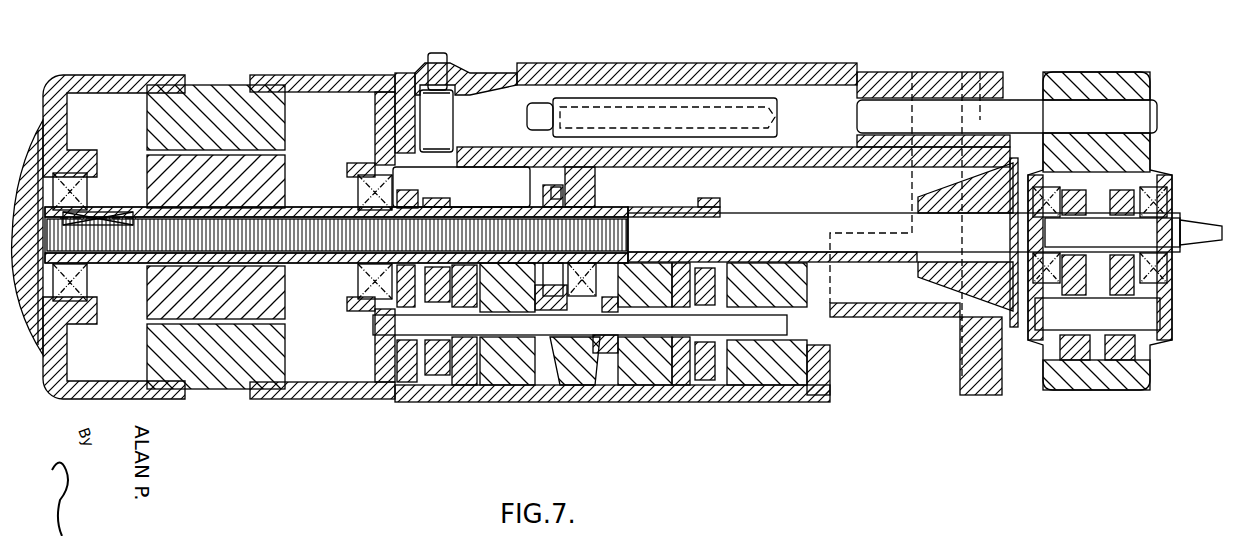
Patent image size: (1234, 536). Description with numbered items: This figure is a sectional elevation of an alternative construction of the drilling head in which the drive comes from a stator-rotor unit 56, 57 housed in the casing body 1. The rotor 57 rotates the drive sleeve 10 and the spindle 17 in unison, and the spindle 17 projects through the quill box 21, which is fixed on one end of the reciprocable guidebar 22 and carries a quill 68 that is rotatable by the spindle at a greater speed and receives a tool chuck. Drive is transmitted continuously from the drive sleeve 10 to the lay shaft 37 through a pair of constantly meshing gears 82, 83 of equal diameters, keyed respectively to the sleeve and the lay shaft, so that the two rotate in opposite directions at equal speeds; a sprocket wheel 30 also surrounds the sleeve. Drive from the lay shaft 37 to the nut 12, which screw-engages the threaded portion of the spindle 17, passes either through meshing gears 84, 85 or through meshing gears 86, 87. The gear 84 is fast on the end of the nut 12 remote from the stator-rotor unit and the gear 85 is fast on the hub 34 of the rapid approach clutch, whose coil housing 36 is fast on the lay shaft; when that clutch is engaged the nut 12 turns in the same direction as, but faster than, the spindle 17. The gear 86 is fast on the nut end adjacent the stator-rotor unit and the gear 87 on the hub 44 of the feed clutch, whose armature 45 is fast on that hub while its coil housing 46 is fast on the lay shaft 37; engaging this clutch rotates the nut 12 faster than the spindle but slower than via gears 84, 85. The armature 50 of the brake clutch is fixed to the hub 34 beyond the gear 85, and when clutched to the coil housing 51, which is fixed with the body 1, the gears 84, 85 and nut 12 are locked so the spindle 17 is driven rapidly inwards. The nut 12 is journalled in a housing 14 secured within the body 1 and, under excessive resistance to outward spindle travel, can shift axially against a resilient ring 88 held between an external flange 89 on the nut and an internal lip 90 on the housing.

The body 1 is at (560, 393).
The drive sleeve 10 is at (128, 263).
The nut 12 is at (655, 212).
The housing 14 is at (545, 293).
The spindle 17 is at (813, 235).
The quill box 21 is at (1120, 72).
The guidebar 22 is at (1073, 128).
The sprocket wheel 30 is at (695, 370).
The hub 34 is at (712, 335).
The coil housing 36 is at (655, 380).
The lay shaft 37 is at (640, 327).
The hub 44 is at (440, 343).
The armature 45 is at (463, 375).
The coil housing 46 is at (502, 385).
The armature 50 is at (755, 378).
The coil housing 51 is at (790, 362).
The stator 56 is at (237, 93).
The rotor 57 is at (273, 172).
The quill 68 is at (1190, 232).
The gear 82 is at (415, 196).
The gear 83 is at (410, 350).
The gear 84 is at (722, 203).
The gear 85 is at (712, 375).
The gear 86 is at (445, 200).
The gear 87 is at (440, 372).
The resilient ring 88 is at (562, 200).
The external flange 89 is at (568, 190).
The internal lip 90 is at (548, 190).